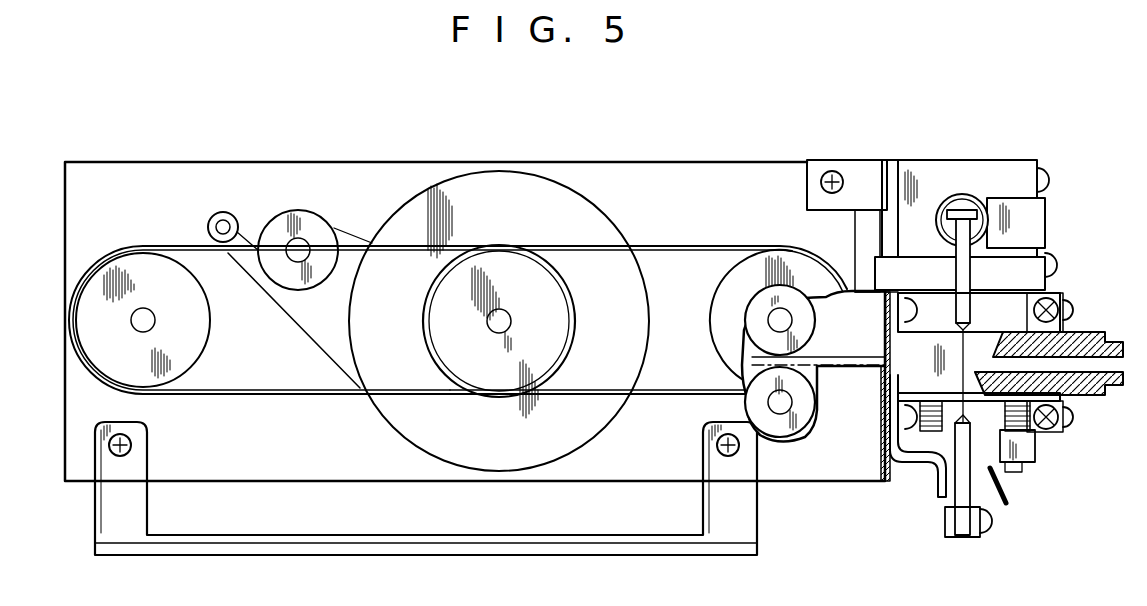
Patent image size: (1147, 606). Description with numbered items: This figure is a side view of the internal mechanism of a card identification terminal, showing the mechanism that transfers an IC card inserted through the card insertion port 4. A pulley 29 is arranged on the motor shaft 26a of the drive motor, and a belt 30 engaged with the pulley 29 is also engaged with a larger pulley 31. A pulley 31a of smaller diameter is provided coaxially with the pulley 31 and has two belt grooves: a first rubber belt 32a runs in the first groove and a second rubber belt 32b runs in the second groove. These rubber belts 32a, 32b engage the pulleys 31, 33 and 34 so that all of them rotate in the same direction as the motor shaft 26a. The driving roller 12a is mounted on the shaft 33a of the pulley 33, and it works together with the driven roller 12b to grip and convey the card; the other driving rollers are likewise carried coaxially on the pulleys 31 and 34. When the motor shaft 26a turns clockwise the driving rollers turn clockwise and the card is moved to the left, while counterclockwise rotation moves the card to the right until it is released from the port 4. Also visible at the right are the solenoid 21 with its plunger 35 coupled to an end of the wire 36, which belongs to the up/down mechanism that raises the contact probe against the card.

The card insertion port 4 is at (1083, 342).
The driving roller 12a is at (812, 306).
The driven roller 12b is at (810, 420).
The solenoid 21 is at (1000, 175).
The motor shaft 26a is at (223, 226).
The pulley 29 is at (212, 222).
The belt 30 is at (303, 331).
The pulley 31 is at (600, 223).
The pulley 31a is at (566, 314).
The first rubber belt 32a is at (668, 396).
The second rubber belt 32b is at (258, 396).
The pulley 33 is at (727, 308).
The shaft 33a is at (812, 330).
The pulley 34 is at (190, 326).
The plunger 35 is at (942, 220).
The wire 36 is at (962, 341).